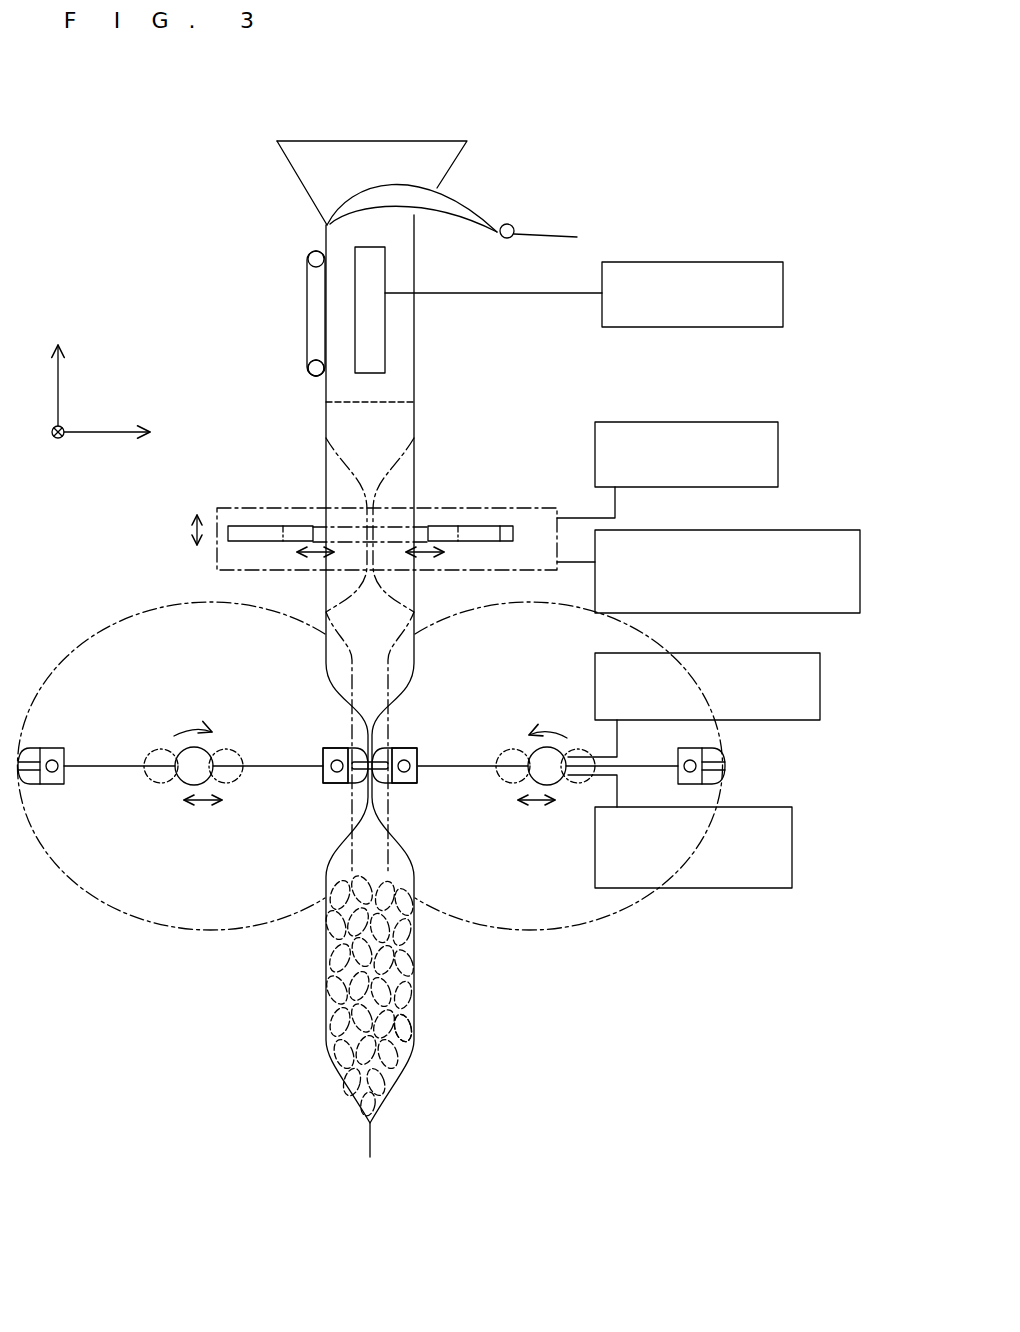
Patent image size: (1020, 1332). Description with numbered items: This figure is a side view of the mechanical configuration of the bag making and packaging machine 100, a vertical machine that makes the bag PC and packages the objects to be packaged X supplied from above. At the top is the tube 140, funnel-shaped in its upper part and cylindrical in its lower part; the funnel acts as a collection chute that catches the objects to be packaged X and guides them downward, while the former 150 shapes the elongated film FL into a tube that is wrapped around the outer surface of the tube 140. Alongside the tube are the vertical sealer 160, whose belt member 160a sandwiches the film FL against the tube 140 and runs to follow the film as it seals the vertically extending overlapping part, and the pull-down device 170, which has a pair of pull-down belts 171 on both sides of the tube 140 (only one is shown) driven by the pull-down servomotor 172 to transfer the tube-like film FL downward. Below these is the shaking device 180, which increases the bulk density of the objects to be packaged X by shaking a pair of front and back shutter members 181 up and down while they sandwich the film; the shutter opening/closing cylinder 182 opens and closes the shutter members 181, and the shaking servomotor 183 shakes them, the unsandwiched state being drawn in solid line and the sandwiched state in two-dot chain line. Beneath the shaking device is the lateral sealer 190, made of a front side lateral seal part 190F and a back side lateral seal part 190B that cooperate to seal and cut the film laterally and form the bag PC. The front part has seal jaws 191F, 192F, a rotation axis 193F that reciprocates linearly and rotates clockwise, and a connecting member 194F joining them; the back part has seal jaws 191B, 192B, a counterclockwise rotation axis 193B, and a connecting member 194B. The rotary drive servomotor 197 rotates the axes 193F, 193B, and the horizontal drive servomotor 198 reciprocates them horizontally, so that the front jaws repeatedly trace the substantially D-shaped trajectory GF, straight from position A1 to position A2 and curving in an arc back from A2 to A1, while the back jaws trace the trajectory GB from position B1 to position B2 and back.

The bag making and packaging machine 100 is at (118, 160).
The tube 140 is at (323, 192).
The former 150 is at (443, 220).
The film FL is at (543, 235).
The vertical sealer 160 is at (300, 302).
The belt member 160a is at (302, 337).
The pull-down device 170 is at (560, 266).
The pull-down belt 171 is at (387, 330).
The pull-down servomotor 172 is at (697, 262).
The shaking device 180 is at (450, 504).
The shutter members 181 is at (240, 530).
The shutter opening/closing cylinder 182 is at (698, 530).
The shaking servomotor 183 is at (688, 422).
The lateral sealer 190 is at (92, 590).
The front side lateral seal part 190F is at (191, 965).
The back side lateral seal part 190B is at (548, 960).
The seal jaw 191F is at (352, 748).
The seal jaw 191B is at (386, 752).
The seal jaw 192F is at (34, 752).
The seal jaw 192B is at (720, 753).
The rotation axis 193F is at (189, 774).
The rotation axis 193B is at (537, 772).
The connecting member 194F is at (285, 770).
The connecting member 194B is at (447, 767).
The rotary drive servomotor 197 is at (707, 653).
The horizontal drive servomotor 198 is at (723, 888).
The trajectory GF is at (140, 933).
The trajectory GB is at (602, 932).
The position A1 is at (357, 655).
The position B1 is at (381, 655).
The position A2 is at (349, 873).
The position B2 is at (391, 873).
The bag PC is at (415, 996).
The object to be packaged X is at (400, 1022).